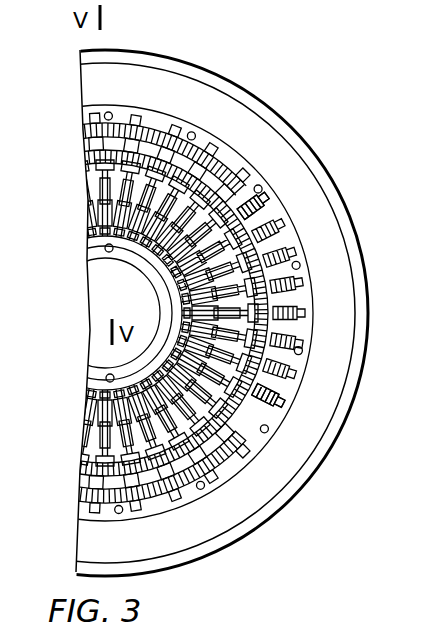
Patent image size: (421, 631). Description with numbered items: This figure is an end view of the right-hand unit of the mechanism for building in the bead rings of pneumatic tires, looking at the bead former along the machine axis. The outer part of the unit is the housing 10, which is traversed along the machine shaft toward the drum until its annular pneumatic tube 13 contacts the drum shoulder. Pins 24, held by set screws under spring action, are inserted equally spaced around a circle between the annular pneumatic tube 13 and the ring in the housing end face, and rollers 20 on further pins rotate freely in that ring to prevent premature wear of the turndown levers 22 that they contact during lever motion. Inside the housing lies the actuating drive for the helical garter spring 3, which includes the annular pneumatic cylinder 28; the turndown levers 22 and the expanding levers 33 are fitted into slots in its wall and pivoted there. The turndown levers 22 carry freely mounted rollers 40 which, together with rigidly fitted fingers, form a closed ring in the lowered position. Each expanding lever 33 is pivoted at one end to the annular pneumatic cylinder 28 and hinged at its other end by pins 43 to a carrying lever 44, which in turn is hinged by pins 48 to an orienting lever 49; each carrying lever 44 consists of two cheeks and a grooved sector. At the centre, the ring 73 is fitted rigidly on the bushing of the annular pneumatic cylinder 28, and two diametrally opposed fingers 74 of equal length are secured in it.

The helical garter spring 3 is at (250, 195).
The housing 10 is at (252, 446).
The annular pneumatic tube 13 is at (262, 505).
The rollers 20 is at (134, 121).
The turndown levers 22 is at (208, 157).
The pins 24 is at (108, 111).
The annular pneumatic cylinder 28 is at (99, 369).
The expanding levers 33 is at (235, 312).
The rollers 40 is at (151, 129).
The pins 43 is at (262, 388).
The carrying levers 44 is at (278, 263).
The pins 48 is at (100, 214).
The orienting levers 49 is at (167, 266).
The ring 73 is at (123, 258).
The fingers 74 is at (105, 248).